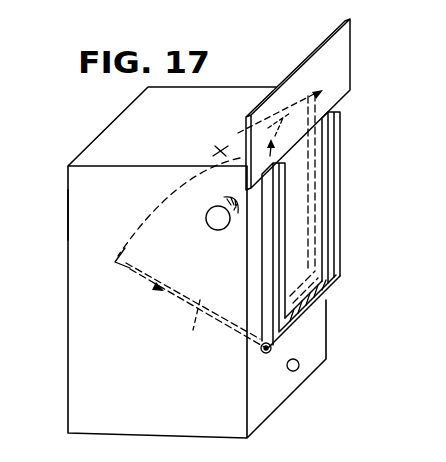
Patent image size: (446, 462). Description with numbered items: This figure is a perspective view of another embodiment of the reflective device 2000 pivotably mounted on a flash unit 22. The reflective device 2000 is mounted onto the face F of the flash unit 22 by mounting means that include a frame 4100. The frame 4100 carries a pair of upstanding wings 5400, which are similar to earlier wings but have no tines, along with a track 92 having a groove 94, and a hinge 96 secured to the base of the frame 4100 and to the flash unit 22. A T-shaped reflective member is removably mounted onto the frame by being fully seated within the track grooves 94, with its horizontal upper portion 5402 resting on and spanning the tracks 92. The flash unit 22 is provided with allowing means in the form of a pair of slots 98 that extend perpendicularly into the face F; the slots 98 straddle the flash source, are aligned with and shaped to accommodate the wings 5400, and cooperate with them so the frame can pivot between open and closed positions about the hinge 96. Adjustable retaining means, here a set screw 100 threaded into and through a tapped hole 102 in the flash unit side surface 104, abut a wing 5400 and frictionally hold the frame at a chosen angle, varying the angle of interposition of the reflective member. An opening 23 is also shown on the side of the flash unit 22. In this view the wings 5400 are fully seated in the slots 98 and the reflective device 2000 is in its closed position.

The flash unit 22 is at (80, 384).
The flash unit side surface 104 is at (68, 211).
The face F is at (316, 337).
The cover plate 5402 is at (346, 42).
The reflective device 2000 is at (302, 219).
The frame 4100 is at (262, 258).
The track 92 is at (340, 127).
The groove 94 is at (378, 226).
The hinge 96 is at (268, 355).
The hole 23 is at (298, 370).
The set screw 100 is at (206, 228).
The tapped hole 102 is at (200, 210).
The slots 98 is at (155, 298).
The upstanding wings 5400 is at (242, 156).